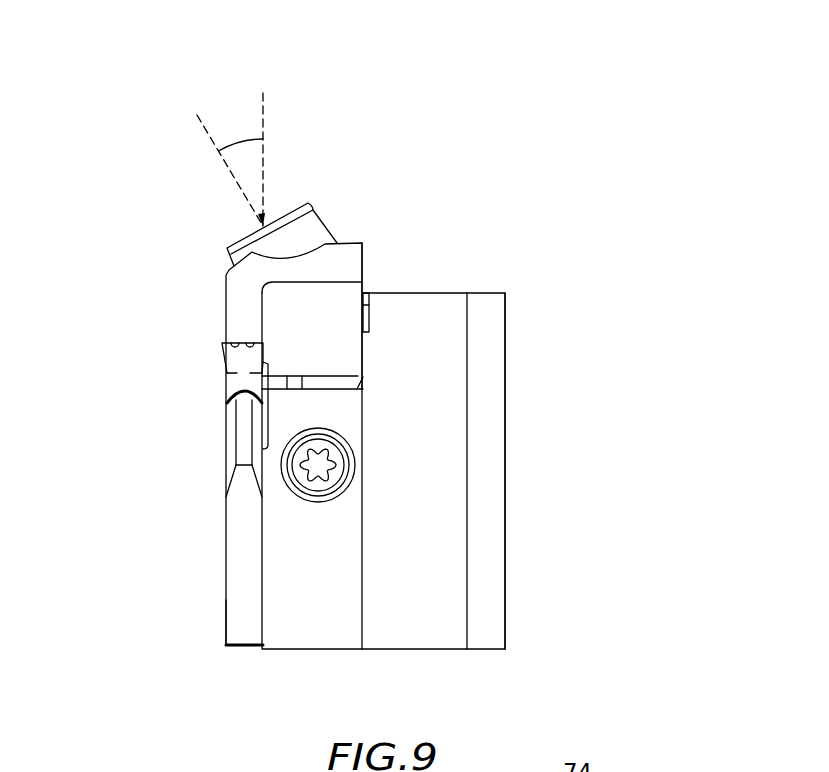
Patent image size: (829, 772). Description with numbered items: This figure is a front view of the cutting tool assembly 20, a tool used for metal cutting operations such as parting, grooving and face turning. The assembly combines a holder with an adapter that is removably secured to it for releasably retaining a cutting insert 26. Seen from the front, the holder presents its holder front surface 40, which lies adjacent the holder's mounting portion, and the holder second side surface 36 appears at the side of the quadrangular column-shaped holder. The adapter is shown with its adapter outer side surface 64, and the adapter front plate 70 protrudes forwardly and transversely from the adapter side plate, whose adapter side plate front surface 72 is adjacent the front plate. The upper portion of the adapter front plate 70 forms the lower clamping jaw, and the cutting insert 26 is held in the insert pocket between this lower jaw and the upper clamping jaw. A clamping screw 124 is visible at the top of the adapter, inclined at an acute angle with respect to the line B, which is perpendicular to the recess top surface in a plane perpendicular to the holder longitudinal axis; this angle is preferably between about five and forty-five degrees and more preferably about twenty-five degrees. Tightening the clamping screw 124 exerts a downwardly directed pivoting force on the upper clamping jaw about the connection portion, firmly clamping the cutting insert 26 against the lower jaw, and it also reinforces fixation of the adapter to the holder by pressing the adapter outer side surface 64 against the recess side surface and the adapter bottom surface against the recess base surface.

The cutting tool assembly 20 is at (155, 112).
The cutting insert 26 is at (247, 358).
The holder second side surface 36 is at (505, 472).
The holder front surface 40 is at (433, 310).
The adapter outer side surface 64 is at (226, 573).
The adapter front plate 70 is at (245, 616).
The adapter side plate front surface 72 is at (310, 630).
The clamping screw 124 is at (303, 232).
The line B is at (234, 147).